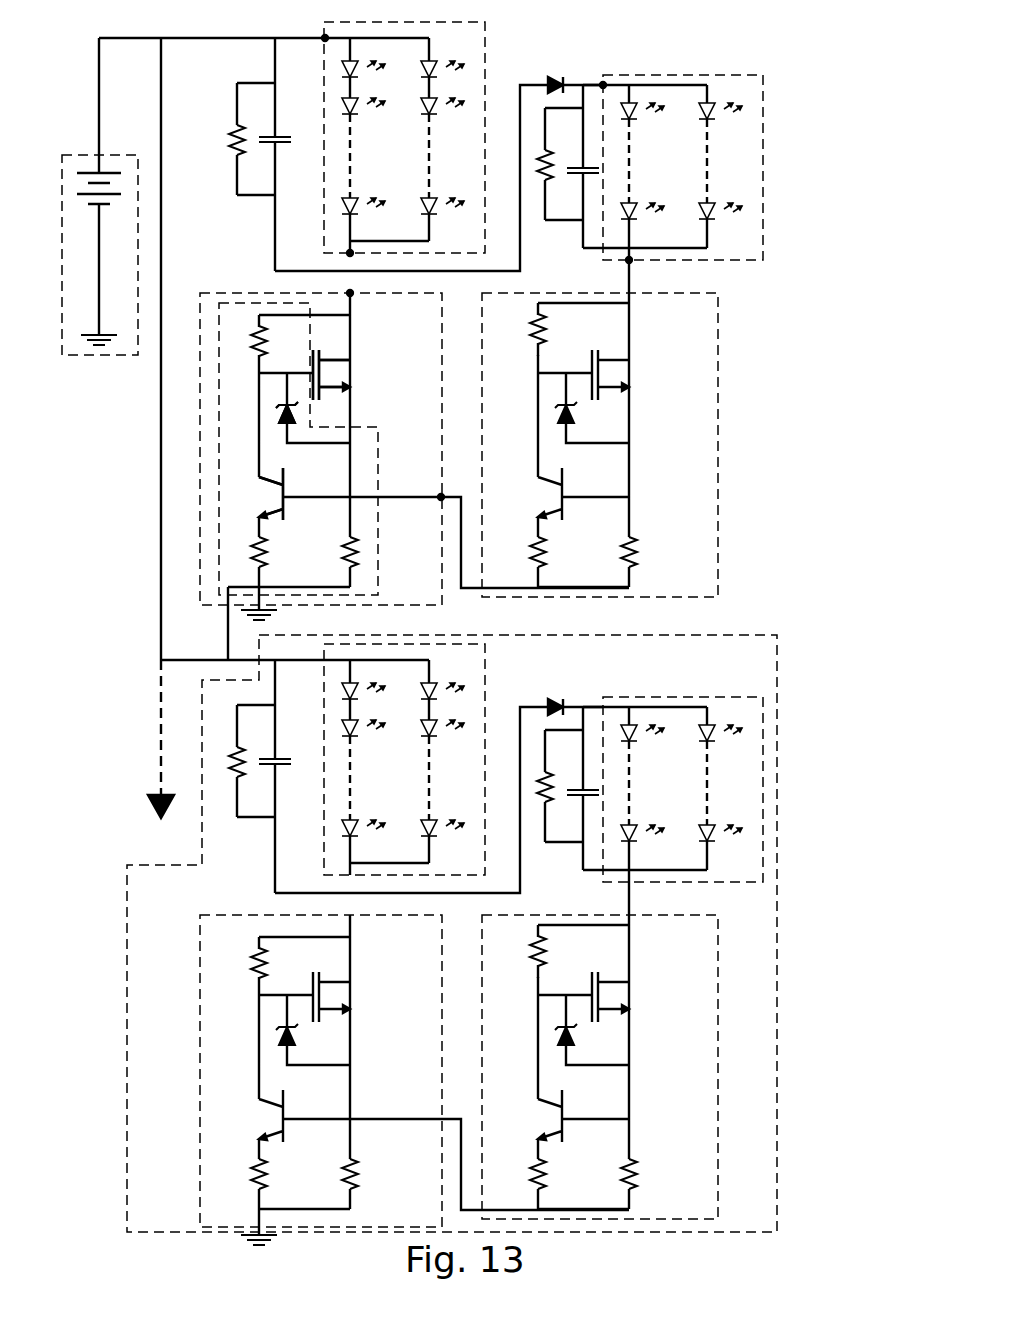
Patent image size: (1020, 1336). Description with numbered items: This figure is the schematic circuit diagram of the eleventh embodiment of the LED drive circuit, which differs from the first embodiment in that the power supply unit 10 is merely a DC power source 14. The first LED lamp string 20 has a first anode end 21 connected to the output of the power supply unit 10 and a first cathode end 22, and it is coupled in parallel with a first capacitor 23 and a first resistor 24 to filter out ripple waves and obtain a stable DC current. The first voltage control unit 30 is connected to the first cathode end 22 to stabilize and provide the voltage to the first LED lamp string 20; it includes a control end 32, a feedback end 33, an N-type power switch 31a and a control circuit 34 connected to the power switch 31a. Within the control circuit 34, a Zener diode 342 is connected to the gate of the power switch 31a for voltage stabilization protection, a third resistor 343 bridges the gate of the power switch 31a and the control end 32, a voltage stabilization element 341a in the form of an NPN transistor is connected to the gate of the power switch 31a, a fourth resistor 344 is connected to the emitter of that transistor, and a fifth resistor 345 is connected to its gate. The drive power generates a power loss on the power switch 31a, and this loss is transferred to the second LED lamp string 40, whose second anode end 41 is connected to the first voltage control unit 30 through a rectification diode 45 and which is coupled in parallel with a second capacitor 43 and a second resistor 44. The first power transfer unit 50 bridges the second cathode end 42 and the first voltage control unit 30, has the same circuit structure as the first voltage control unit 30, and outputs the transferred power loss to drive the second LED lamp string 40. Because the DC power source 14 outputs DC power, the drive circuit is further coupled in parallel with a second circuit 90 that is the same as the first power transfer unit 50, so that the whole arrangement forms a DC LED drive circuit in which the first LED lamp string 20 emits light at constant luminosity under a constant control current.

The power supply unit 10 is at (97, 196).
The DC power source 14 is at (110, 168).
The first LED lamp string 20 is at (397, 137).
The first anode end 21 is at (324, 36).
The first cathode end 22 is at (355, 255).
The first capacitor 23 is at (278, 128).
The first resistor 24 is at (237, 158).
The first voltage control unit 30 is at (261, 439).
The power switch 31a is at (352, 374).
The control end 32 is at (348, 292).
The feedback end 33 is at (440, 500).
The control circuit 34 is at (265, 444).
The voltage stabilization element 341a is at (290, 488).
The Zener diode 342 is at (278, 426).
The third resistor 343 is at (252, 358).
The fourth resistor 344 is at (248, 556).
The fifth resistor 345 is at (357, 560).
The second LED lamp string 40 is at (667, 159).
The second anode end 41 is at (602, 83).
The second cathode end 42 is at (632, 262).
The second capacitor 43 is at (582, 176).
The second resistor 44 is at (545, 182).
The rectification diode 45 is at (557, 78).
The first power transfer unit 50 is at (727, 408).
The second circuit 90 is at (783, 922).